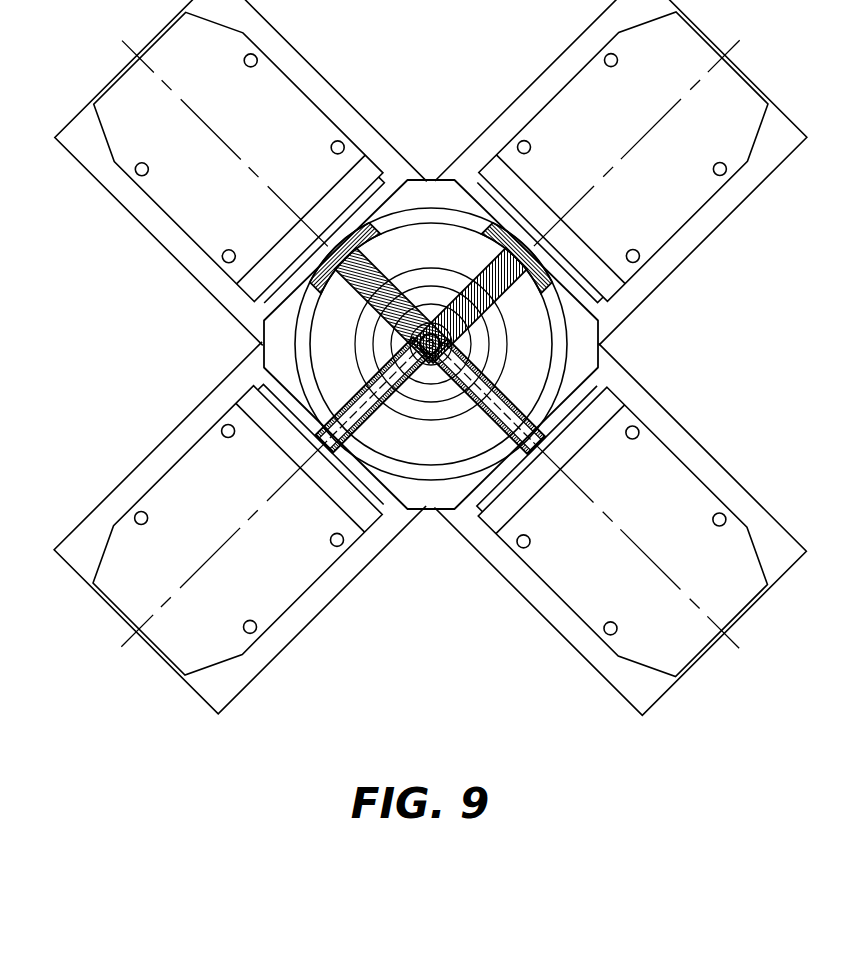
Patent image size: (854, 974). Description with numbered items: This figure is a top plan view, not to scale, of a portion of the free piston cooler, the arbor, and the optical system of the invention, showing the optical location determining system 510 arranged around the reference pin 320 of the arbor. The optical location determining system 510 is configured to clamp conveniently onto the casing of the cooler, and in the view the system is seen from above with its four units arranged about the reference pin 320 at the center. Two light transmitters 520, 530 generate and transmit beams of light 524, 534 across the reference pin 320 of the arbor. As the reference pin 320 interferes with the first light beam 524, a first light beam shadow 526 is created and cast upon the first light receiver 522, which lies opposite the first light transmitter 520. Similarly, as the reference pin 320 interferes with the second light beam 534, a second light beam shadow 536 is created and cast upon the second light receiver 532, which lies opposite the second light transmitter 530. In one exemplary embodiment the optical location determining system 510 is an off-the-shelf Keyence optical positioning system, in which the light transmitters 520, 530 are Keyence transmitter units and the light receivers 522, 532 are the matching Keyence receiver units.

The optical location determining system 510 is at (150, 400).
The light transmitter 520 is at (240, 137).
The light transmitter 530 is at (578, 137).
The first light receiver 522 is at (626, 515).
The second light receiver 532 is at (189, 517).
The first light beam 524 is at (383, 274).
The second light beam 534 is at (500, 285).
The first light beam shadow 526 is at (507, 408).
The second light beam shadow 536 is at (348, 420).
The reference pin 320 is at (420, 340).